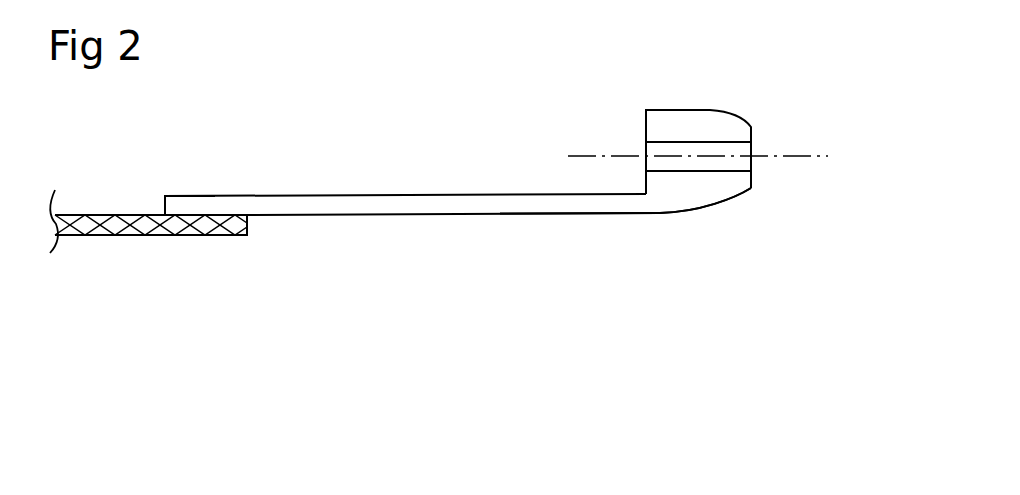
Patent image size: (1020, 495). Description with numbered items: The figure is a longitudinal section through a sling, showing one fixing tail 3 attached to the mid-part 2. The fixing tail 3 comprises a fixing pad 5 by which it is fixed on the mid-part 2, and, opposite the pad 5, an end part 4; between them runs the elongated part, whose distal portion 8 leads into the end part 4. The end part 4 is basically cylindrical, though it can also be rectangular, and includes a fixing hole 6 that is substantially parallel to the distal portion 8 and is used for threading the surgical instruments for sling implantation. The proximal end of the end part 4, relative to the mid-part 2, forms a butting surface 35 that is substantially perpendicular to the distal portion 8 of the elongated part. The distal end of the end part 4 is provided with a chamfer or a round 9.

The mid-part 2 is at (134, 227).
The fixing tail 3 is at (373, 213).
The fixing pad 5 is at (199, 207).
The distal portion 8 is at (587, 203).
The end part 4 is at (680, 212).
The chamfer or round 9 is at (748, 125).
The fixing hole 6 is at (668, 142).
The butting surface 35 is at (646, 121).